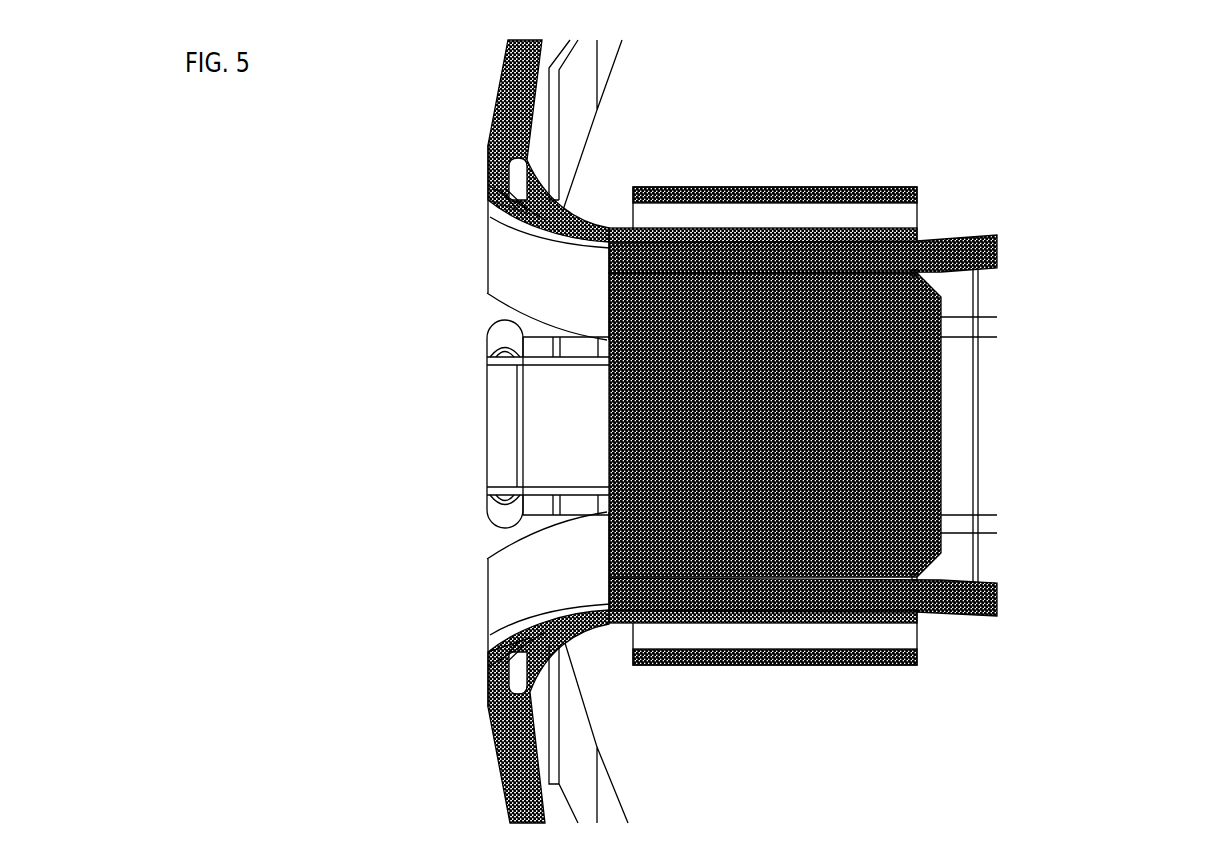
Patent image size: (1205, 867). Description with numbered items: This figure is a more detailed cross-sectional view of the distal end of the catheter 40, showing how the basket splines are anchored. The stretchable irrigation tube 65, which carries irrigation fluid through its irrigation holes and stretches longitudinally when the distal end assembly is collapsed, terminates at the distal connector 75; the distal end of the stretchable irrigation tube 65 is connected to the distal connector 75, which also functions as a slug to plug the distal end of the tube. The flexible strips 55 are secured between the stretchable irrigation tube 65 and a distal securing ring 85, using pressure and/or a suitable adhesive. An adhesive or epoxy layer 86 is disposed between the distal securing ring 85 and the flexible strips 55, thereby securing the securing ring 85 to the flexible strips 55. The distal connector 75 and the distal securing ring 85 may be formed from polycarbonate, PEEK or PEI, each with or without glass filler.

The catheter 40 is at (1129, 135).
The flexible strips 55 is at (510, 94).
The stretchable irrigation tube 65 is at (963, 240).
The distal connector 75 is at (720, 333).
The distal securing ring 85 is at (833, 187).
The adhesive or epoxy layer 86 is at (668, 210).